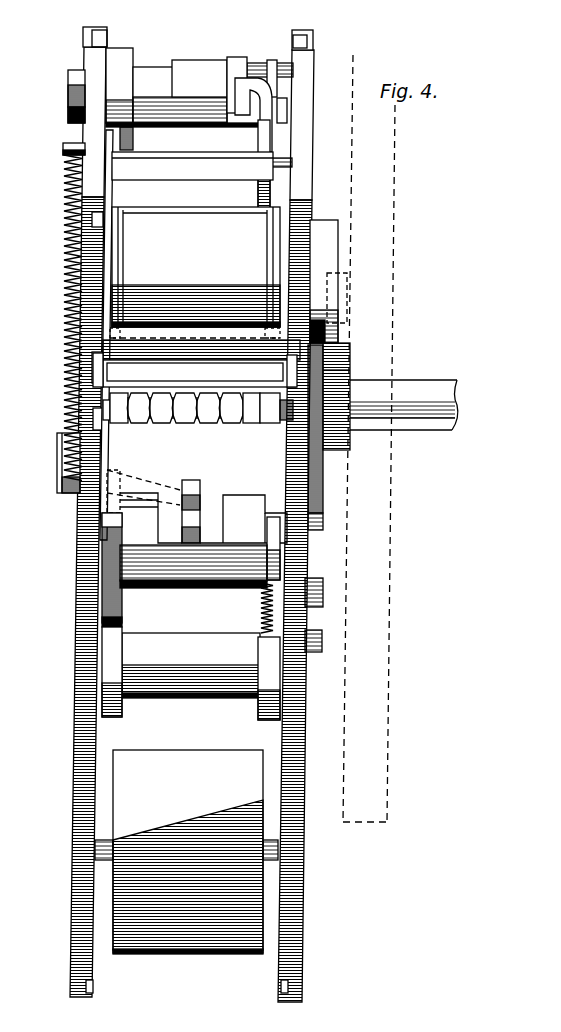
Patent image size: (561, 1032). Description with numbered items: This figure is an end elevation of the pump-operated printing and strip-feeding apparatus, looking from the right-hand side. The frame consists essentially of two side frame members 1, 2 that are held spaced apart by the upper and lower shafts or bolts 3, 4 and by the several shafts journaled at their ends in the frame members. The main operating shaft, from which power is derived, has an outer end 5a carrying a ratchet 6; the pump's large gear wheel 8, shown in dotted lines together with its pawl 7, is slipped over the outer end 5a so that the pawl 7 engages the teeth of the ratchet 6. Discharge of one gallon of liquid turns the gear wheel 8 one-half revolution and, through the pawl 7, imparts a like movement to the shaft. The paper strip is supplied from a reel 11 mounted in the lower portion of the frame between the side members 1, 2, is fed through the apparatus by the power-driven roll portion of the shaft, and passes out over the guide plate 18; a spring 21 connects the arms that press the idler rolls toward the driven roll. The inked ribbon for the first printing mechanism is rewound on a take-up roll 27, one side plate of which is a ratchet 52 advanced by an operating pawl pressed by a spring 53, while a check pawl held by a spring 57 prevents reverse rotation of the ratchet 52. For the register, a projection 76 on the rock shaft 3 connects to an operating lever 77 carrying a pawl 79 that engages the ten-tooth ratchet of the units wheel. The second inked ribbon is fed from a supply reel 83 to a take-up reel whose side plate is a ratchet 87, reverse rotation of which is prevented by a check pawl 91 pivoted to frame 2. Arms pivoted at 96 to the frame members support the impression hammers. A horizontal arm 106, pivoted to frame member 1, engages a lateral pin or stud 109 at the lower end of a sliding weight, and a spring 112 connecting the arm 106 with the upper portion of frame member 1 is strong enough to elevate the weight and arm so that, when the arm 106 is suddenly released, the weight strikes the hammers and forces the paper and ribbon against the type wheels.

The side frame member 1 is at (72, 903).
The side frame member 2 is at (303, 883).
The upper shaft 3 is at (68, 104).
The lower shaft 4 is at (187, 698).
The outer end of shaft 5a is at (416, 388).
The ratchet 6 is at (350, 347).
The pawl 7 is at (348, 275).
The gear wheel 8 is at (398, 275).
The reel 11 is at (193, 757).
The guide plate 18 is at (195, 370).
The spring 21 is at (321, 490).
The take-up roll 27 is at (188, 593).
The ratchet 52 is at (117, 610).
The spring 53 is at (270, 560).
The spring 57 is at (262, 618).
The projection 76 is at (231, 60).
The operating lever 77 is at (250, 133).
The pawl 79 is at (257, 194).
The supply reel 83 is at (196, 267).
The ratchet 87 is at (141, 139).
The check pawl 91 is at (272, 62).
The pivot 96 is at (210, 424).
The horizontal arm 106 is at (199, 492).
The lateral pin 109 is at (193, 542).
The spring 112 is at (70, 292).